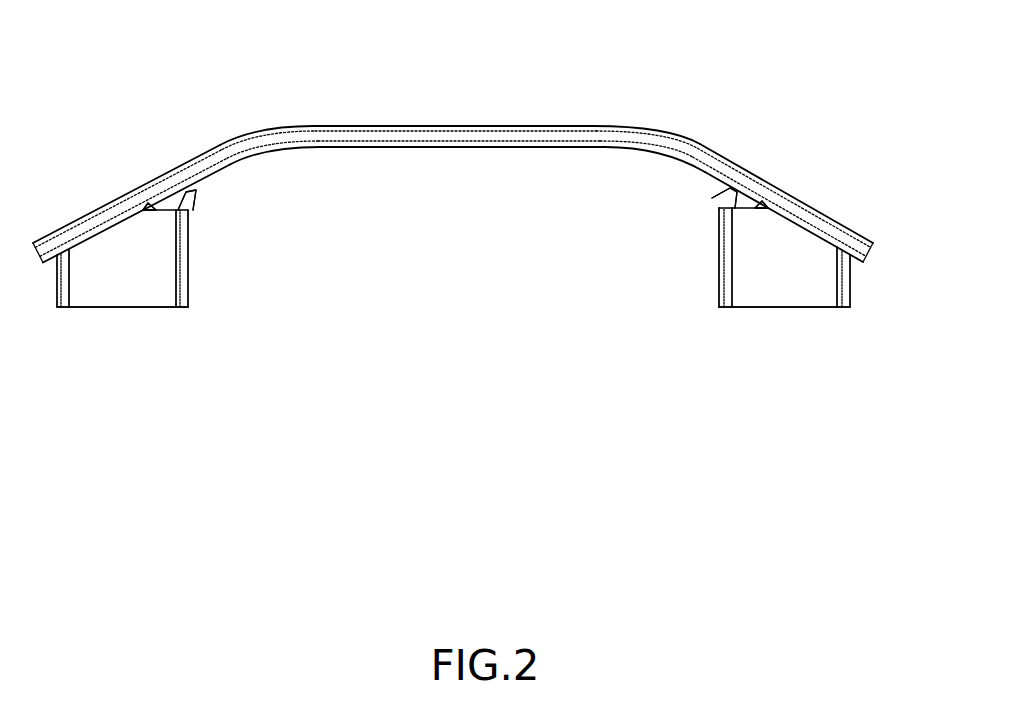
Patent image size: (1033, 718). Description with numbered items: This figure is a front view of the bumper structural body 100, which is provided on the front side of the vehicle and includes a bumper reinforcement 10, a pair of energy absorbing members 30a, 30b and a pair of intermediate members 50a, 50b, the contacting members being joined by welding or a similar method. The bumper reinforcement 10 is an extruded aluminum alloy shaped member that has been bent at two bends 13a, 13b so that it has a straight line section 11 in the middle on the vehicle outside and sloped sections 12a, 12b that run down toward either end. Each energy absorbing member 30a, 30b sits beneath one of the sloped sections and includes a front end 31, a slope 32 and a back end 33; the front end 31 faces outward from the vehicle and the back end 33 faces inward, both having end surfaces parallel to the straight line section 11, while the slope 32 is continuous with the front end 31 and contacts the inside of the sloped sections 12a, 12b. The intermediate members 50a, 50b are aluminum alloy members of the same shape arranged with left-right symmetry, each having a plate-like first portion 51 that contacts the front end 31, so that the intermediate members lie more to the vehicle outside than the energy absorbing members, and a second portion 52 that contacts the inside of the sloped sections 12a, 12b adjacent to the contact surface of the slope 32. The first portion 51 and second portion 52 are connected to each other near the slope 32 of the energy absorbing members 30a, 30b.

The bumper structural body 100 is at (738, 85).
The bumper reinforcement 10 is at (332, 95).
The straight line section 11 is at (460, 148).
The sloped section 12a is at (112, 192).
The sloped section 12b is at (795, 206).
The bend 13a is at (263, 157).
The bend 13b is at (633, 153).
The energy absorbing member 30a is at (104, 340).
The energy absorbing member 30b is at (808, 340).
The front end 31 is at (165, 216).
The slope 32 is at (104, 242).
The back end 33 is at (133, 308).
The intermediate member 50a is at (186, 204).
The intermediate member 50b is at (703, 213).
The first portion 51 is at (140, 204).
The second portion 52 is at (177, 186).